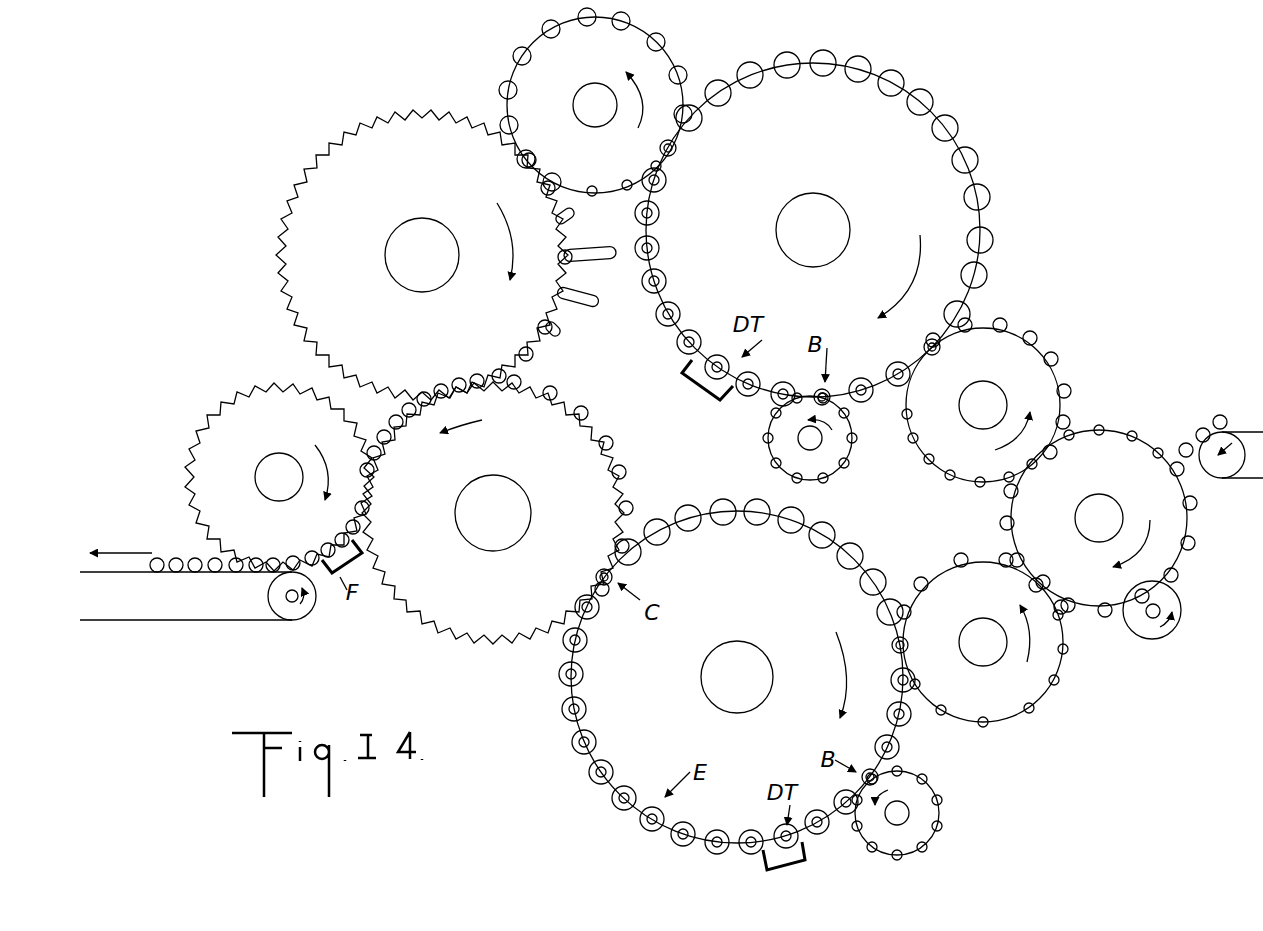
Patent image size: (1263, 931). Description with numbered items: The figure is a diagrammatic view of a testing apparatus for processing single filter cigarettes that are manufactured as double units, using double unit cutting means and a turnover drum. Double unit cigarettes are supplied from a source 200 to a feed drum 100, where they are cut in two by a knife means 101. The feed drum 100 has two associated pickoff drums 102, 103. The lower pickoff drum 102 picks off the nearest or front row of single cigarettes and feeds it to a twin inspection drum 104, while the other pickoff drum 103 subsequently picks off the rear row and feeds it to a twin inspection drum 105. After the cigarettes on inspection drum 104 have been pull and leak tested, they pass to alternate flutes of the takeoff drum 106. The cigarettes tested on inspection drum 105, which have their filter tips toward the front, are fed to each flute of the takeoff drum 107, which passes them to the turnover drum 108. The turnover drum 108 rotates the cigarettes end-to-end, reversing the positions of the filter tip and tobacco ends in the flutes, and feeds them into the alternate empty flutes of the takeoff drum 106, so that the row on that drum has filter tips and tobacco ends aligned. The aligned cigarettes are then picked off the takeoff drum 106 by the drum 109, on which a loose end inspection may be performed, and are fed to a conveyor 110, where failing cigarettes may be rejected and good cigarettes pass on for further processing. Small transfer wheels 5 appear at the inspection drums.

The transfer star wheel 5 is at (842, 437).
The feed drum 100 is at (1121, 486).
The knife means 101 is at (1181, 606).
The lower pickoff drum 102 is at (1001, 612).
The pickoff drum 103 is at (1001, 374).
The twin inspection drum 104 is at (760, 598).
The twin inspection drum 105 is at (840, 162).
The takeoff drum 106 is at (518, 461).
The takeoff drum 107 is at (615, 70).
The turnover drum 108 is at (440, 195).
The drum 109 is at (297, 444).
The conveyor 110 is at (198, 618).
The source 200 is at (1198, 427).